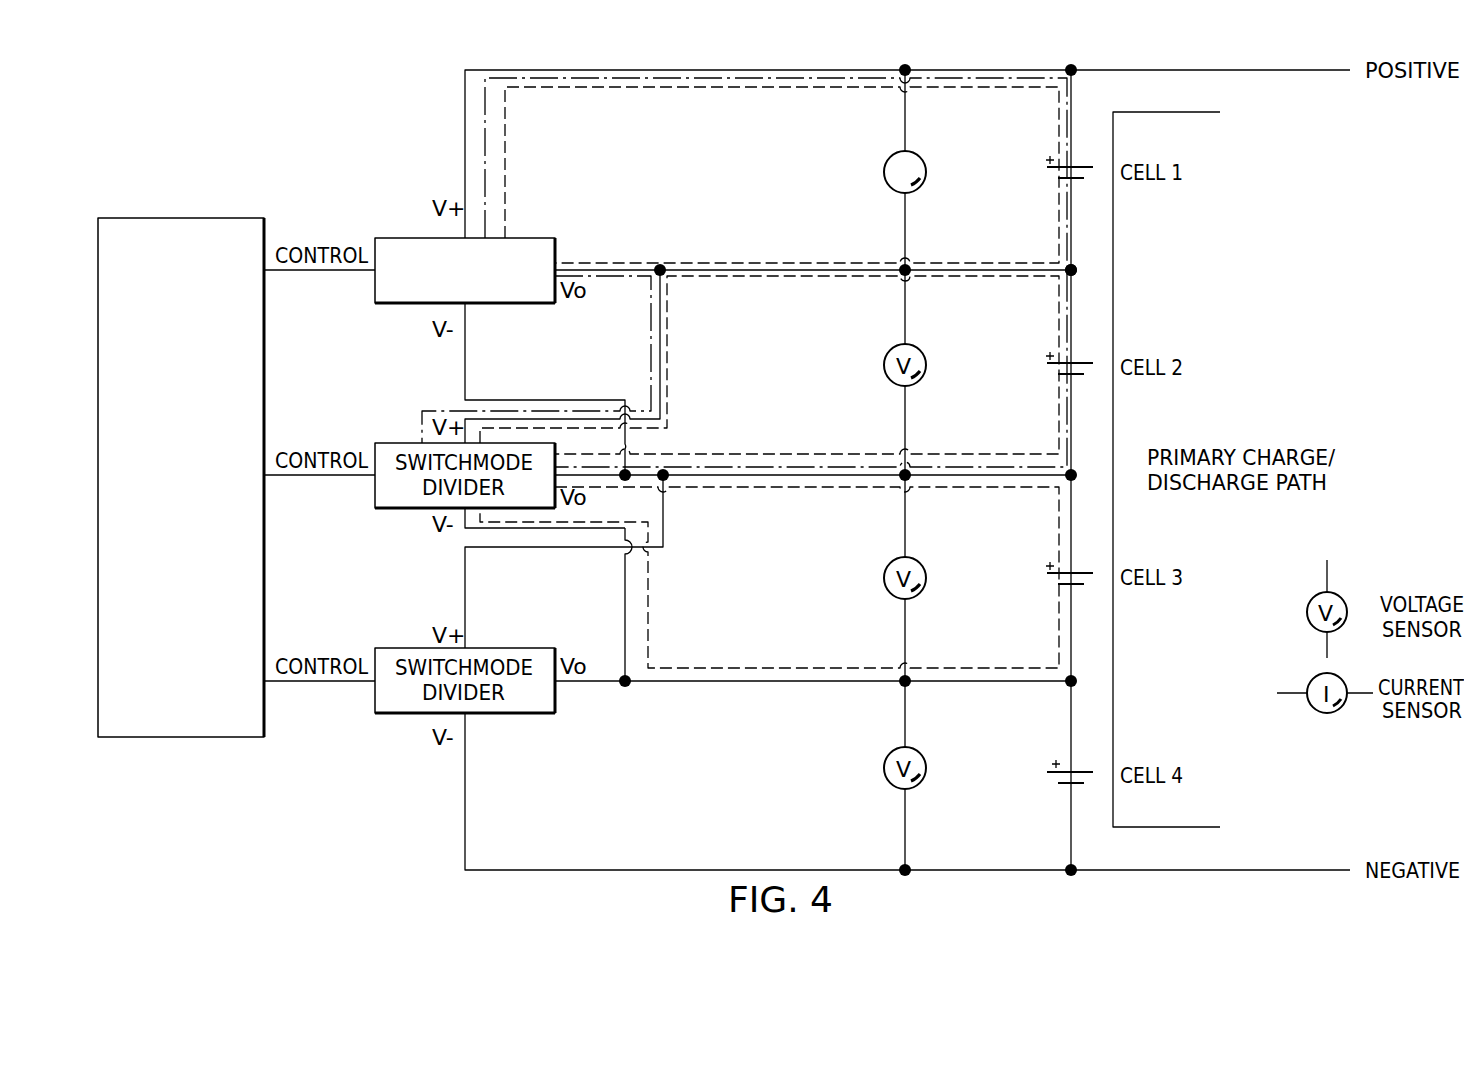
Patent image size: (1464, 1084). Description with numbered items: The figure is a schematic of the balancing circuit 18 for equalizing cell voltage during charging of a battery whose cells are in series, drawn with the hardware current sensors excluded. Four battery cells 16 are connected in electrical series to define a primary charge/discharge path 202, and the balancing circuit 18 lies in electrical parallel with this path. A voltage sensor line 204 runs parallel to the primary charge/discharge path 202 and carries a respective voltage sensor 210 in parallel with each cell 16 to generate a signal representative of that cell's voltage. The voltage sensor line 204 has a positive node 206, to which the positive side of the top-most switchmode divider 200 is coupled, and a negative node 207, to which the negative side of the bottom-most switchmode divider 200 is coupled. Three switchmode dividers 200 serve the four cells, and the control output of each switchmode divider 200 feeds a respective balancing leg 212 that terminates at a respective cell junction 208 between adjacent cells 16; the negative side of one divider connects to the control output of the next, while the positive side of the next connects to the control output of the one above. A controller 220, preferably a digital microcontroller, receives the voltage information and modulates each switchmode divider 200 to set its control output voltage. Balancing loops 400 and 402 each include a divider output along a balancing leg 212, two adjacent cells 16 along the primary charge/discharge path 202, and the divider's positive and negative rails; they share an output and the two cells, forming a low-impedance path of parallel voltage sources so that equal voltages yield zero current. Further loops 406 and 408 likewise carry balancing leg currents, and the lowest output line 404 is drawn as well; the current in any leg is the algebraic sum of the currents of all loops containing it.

The balancing circuit 18 is at (168, 68).
The battery cell 16 is at (1050, 165).
The switchmode divider (SMD) 200 is at (374, 281).
The primary charge/discharge path 202 is at (1066, 200).
The voltage sensor line 204 is at (903, 122).
The positive node 206 is at (905, 66).
The negative node 207 is at (902, 866).
The cell junction 208 is at (1066, 264).
The voltage sensor 210 is at (884, 172).
The balancing leg 212 is at (731, 278).
The controller 220 is at (265, 362).
The balancing loop 400 is at (980, 279).
The balancing loop 402 is at (984, 489).
The divider output line 404 is at (673, 682).
The balancing loop 406 is at (578, 89).
The balancing loop 408 is at (521, 77).